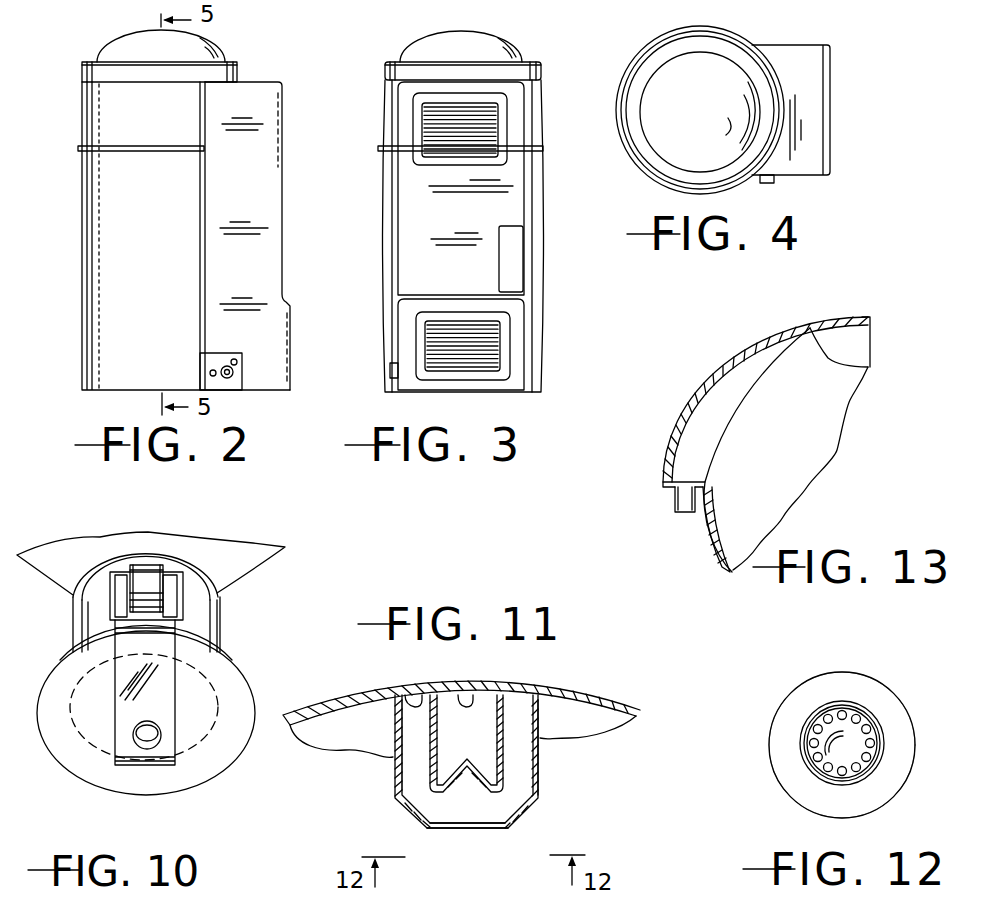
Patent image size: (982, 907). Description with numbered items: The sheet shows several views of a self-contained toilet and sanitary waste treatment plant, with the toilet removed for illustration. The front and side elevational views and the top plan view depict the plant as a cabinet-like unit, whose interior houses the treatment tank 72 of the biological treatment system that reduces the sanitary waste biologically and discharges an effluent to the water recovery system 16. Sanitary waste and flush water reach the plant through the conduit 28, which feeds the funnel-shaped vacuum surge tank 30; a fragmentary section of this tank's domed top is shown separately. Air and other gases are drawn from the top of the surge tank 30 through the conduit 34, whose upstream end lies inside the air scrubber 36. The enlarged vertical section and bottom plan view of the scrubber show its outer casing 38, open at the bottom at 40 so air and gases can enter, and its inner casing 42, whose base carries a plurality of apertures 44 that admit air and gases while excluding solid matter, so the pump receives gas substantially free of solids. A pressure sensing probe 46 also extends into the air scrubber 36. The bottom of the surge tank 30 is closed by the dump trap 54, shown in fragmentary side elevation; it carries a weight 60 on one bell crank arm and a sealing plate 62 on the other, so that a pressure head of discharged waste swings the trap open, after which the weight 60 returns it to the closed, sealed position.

In FIG. 2, the water recovery system 16 is at (288, 208).
In FIG. 13, the conduit 28 is at (675, 493).
In FIG. 2, the vacuum surge tank 30 is at (213, 44).
In FIG. 3, the vacuum surge tank 30 is at (513, 42).
In FIG. 13, the vacuum surge tank 30 is at (870, 365).
In FIG. 11, the conduit 34 is at (450, 693).
In FIG. 11, the air scrubber 36 is at (548, 766).
In FIG. 12, the air scrubber 36 is at (910, 722).
In FIG. 11, the outer casing 38 is at (538, 784).
In FIG. 12, the outer casing 38 is at (885, 778).
In FIG. 11, the bottom opening 40 is at (505, 830).
In FIG. 11, the inner casing 42 is at (503, 740).
In FIG. 12, the inner casing 42 is at (843, 730).
In FIG. 11, the apertures 44 is at (491, 792).
In FIG. 12, the apertures 44 is at (825, 770).
In FIG. 11, the pressure sensing probe 46 is at (418, 700).
In FIG. 10, the dump trap 54 is at (238, 641).
In FIG. 10, the weight 60 is at (152, 573).
In FIG. 10, the sealing plate 62 is at (190, 762).
In FIG. 2, the treatment tank 72 is at (63, 228).